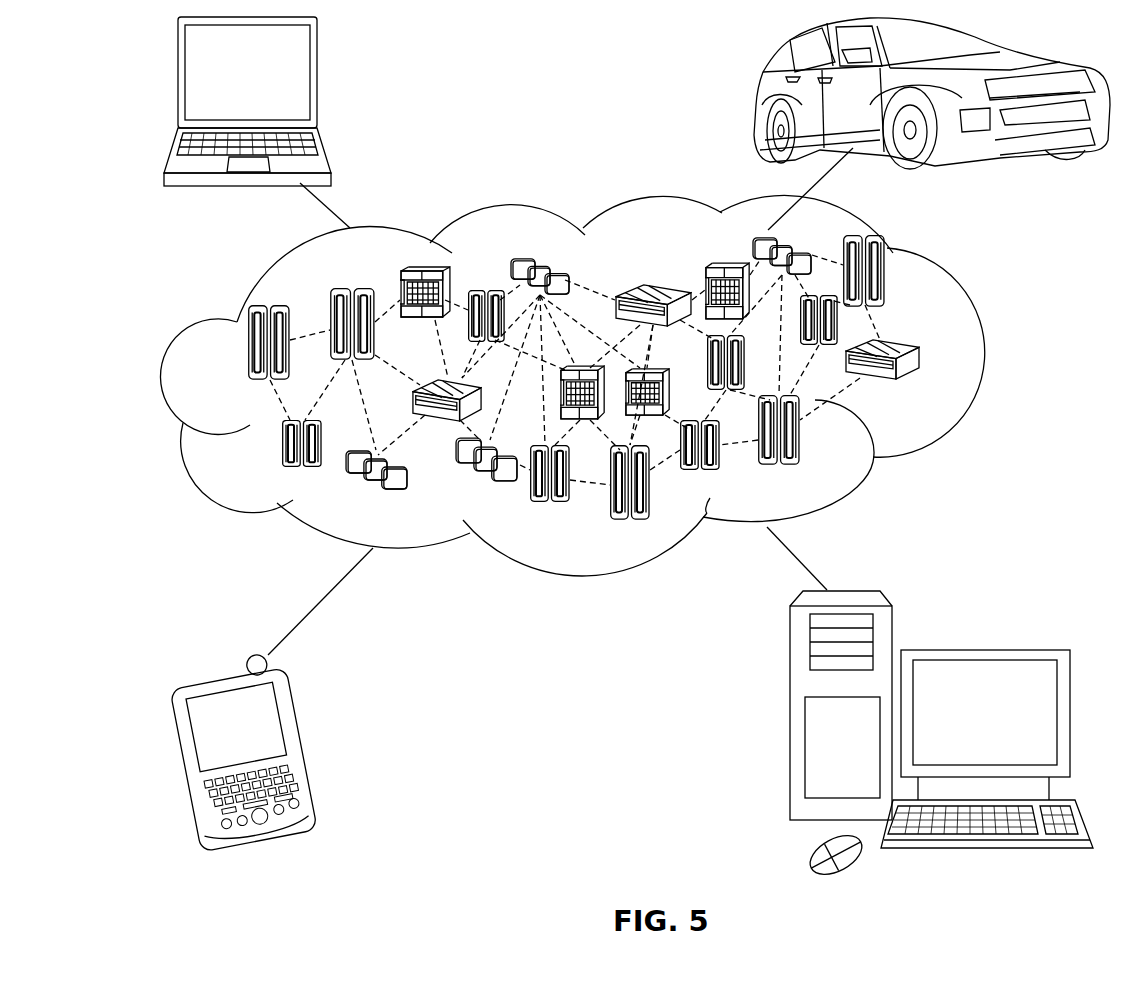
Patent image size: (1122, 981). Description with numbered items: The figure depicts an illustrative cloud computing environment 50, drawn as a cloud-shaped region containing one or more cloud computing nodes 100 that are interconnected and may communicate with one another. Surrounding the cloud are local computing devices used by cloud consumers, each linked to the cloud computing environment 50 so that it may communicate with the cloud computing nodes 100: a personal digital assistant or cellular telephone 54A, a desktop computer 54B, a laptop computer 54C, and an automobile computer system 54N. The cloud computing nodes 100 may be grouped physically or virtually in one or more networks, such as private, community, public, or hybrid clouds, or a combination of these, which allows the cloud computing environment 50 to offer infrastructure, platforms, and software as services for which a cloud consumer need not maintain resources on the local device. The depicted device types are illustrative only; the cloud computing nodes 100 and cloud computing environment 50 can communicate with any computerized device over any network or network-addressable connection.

The cloud computing environment 50 is at (983, 362).
The cloud computing nodes 100 is at (933, 391).
The personal digital assistant or cellular telephone 54A is at (313, 742).
The desktop computer 54B is at (983, 648).
The laptop computer 54C is at (320, 82).
The automobile computer system 54N is at (760, 97).